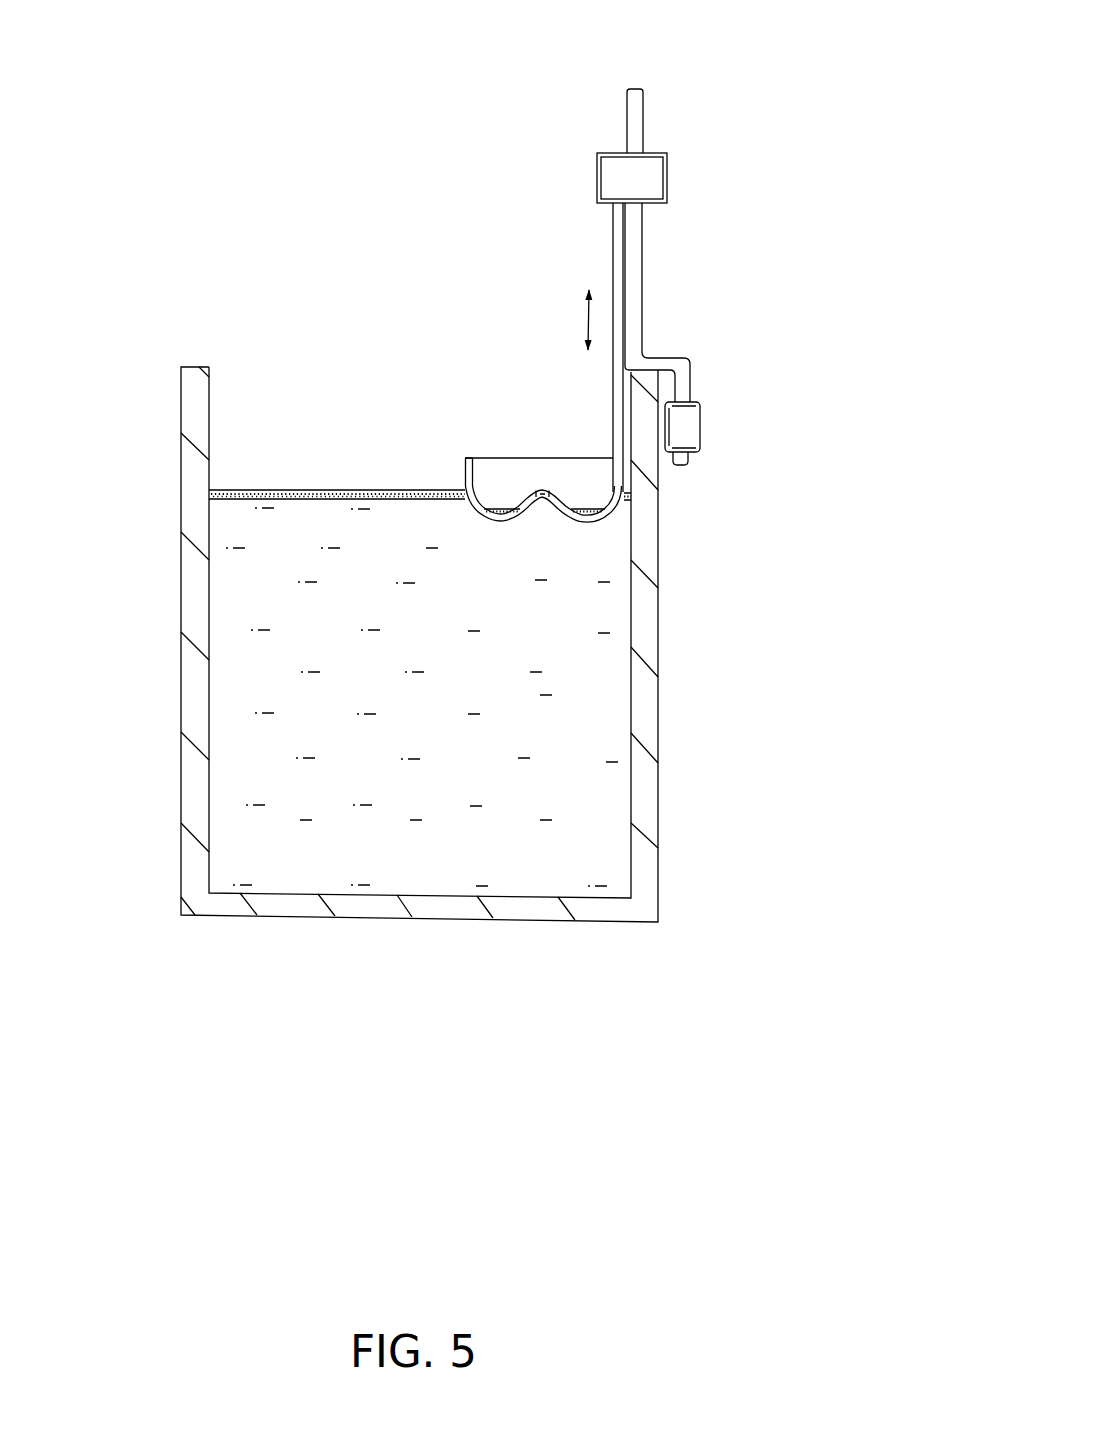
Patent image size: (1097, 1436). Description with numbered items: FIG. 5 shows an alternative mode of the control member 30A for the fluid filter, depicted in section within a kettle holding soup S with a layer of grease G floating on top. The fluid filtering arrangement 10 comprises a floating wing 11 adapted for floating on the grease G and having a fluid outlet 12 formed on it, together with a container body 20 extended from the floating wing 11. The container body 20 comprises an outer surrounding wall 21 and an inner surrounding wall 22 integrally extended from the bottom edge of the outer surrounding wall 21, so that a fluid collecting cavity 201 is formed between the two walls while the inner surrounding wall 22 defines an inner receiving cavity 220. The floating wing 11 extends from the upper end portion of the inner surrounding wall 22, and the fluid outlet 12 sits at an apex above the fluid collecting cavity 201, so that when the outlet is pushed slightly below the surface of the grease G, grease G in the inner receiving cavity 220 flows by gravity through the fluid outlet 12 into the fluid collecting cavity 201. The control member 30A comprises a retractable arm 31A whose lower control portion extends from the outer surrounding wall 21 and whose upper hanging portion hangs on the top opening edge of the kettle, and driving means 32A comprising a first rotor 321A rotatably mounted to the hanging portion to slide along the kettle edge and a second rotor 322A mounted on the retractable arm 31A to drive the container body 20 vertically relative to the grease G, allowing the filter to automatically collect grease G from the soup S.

The fluid filtering arrangement 10 is at (482, 278).
The floating wing 11 is at (493, 487).
The fluid outlet 12 is at (543, 490).
The container body 20 is at (543, 495).
The outer surrounding wall 21 is at (467, 472).
The fluid collecting cavity 201 is at (530, 500).
The inner surrounding wall 22 is at (568, 527).
The inner receiving cavity 220 is at (542, 515).
The control member 30A is at (711, 249).
The retractable arm 31A is at (617, 257).
The driving means 32A is at (723, 385).
The first rotor 321A is at (668, 427).
The second rotor 322A is at (653, 172).
The soup S is at (265, 547).
The grease G is at (293, 490).